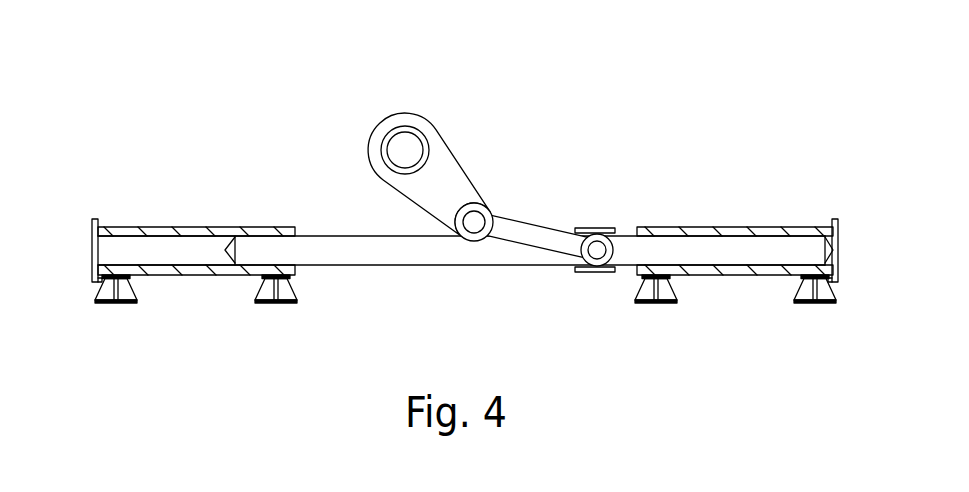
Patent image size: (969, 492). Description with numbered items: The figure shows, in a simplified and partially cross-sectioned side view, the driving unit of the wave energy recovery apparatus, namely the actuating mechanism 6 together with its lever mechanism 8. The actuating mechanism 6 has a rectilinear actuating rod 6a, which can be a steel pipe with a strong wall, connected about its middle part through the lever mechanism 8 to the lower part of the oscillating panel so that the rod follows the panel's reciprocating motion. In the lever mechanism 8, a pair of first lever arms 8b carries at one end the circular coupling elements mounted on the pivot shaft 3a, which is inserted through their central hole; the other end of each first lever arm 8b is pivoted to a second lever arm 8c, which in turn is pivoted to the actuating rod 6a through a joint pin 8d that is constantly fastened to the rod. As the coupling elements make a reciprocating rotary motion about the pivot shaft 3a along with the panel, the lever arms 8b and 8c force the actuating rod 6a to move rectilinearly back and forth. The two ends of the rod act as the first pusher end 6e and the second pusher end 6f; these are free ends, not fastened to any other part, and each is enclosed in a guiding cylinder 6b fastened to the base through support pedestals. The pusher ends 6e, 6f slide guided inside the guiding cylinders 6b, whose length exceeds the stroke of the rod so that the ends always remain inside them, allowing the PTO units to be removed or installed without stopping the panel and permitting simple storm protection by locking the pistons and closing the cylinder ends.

The pivot shaft 3a is at (402, 148).
The actuating mechanism 6 is at (582, 96).
The actuating rod 6a is at (325, 238).
The guiding cylinder 6b is at (185, 230).
The first pusher end 6e is at (230, 252).
The second pusher end 6f is at (842, 237).
The lever mechanism 8 is at (459, 109).
The first lever arm 8b is at (460, 170).
The second lever arm 8c is at (545, 243).
The joint pin 8d is at (595, 257).